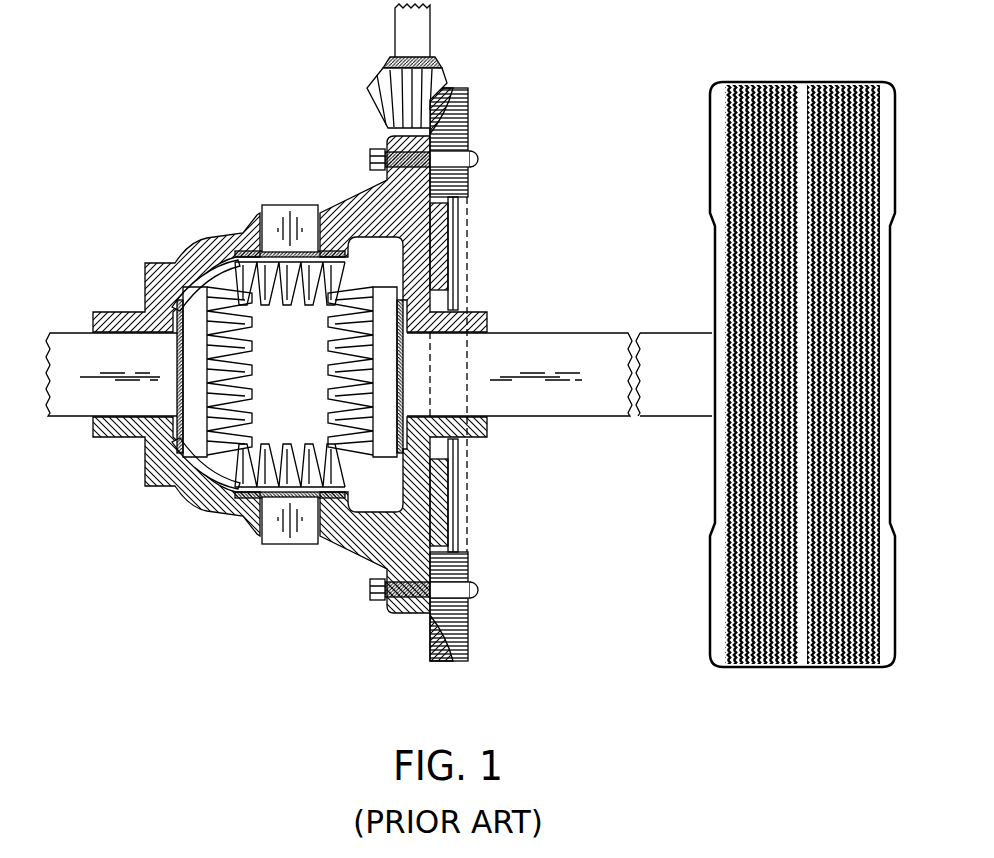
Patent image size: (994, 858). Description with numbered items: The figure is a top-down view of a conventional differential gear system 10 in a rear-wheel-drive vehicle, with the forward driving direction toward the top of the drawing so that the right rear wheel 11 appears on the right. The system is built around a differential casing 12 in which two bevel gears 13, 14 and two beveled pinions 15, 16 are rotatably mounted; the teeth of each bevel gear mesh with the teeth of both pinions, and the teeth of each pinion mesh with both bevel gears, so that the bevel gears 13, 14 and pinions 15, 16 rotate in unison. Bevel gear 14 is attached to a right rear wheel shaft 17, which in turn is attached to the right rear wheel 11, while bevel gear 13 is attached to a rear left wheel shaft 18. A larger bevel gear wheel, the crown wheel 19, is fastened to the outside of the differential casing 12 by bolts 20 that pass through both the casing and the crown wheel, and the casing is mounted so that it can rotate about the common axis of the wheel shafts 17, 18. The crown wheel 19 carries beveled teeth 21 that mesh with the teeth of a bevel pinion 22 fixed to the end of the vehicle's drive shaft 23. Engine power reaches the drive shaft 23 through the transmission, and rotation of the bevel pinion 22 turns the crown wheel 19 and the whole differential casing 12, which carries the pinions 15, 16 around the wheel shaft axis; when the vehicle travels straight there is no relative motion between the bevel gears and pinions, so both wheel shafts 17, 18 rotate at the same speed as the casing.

The differential gear system 10 is at (188, 82).
The right rear wheel 11 is at (801, 85).
The differential casing 12 is at (417, 221).
The bevel gear 13 is at (211, 386).
The bevel gear 14 is at (393, 401).
The beveled pinion 15 is at (287, 442).
The beveled pinion 16 is at (289, 310).
The right rear wheel shaft 17 is at (552, 333).
The rear left wheel shaft 18 is at (63, 333).
The crown wheel 19 is at (470, 125).
The bolts 20 is at (480, 160).
The beveled teeth 21 is at (462, 92).
The bevel pinion 22 is at (375, 106).
The drive shaft 23 is at (395, 32).